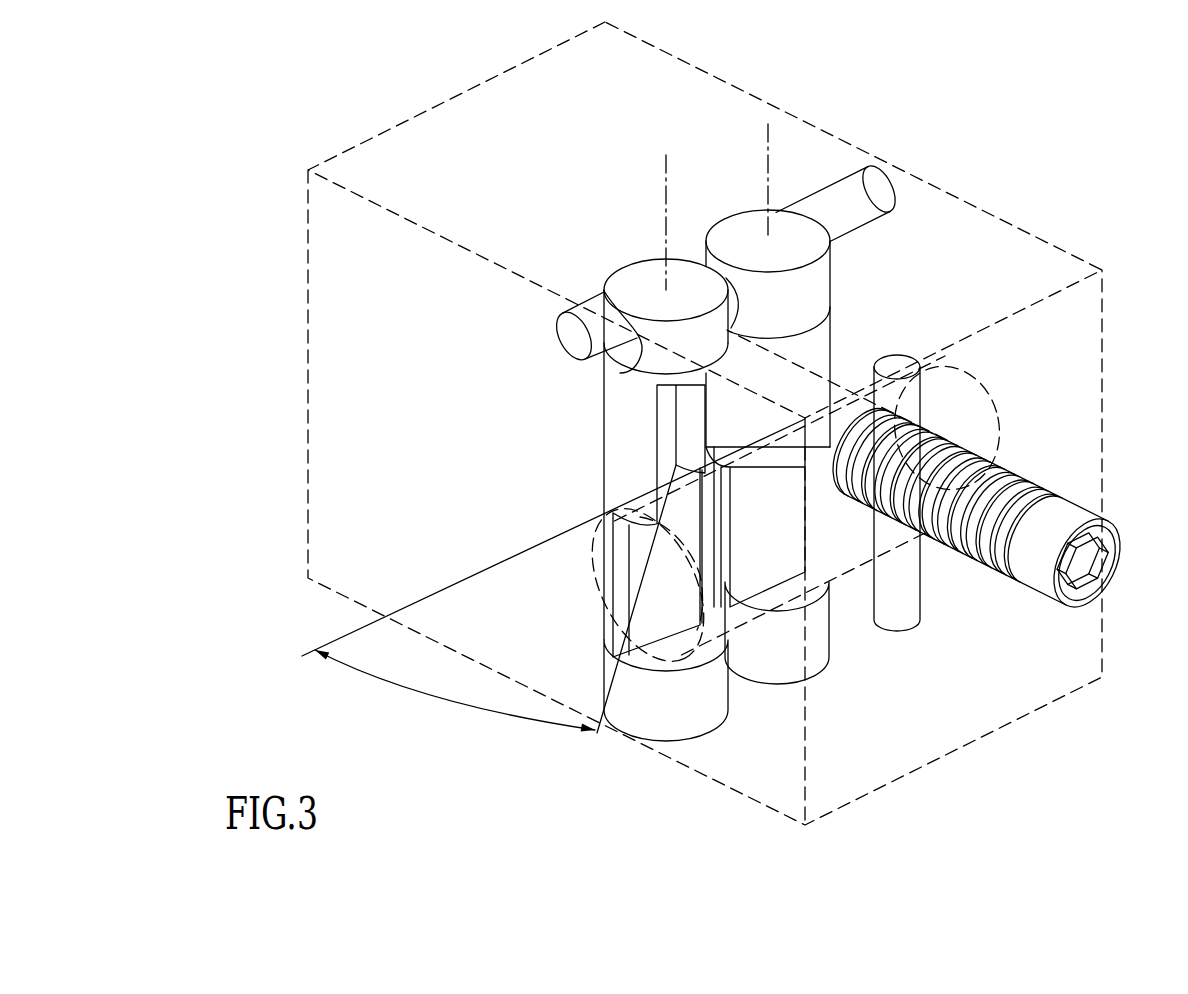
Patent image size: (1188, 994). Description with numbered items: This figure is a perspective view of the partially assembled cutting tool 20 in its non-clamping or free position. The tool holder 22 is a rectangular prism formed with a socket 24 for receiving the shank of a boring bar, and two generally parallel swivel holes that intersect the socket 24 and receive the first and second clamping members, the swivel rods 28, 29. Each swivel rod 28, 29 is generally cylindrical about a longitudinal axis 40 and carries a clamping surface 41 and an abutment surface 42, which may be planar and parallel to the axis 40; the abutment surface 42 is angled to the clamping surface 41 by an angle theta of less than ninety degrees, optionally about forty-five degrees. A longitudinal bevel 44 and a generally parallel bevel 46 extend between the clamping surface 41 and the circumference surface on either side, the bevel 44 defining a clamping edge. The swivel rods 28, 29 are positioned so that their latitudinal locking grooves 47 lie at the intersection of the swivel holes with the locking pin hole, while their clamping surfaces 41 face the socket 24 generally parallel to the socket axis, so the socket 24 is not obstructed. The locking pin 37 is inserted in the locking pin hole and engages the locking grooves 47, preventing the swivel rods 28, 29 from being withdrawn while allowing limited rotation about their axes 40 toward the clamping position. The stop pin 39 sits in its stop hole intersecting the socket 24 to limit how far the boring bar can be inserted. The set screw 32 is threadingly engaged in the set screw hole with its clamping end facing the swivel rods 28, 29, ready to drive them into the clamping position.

The cutting tool 20 is at (246, 182).
The tool holder 22 is at (432, 431).
The socket 24 is at (993, 413).
The swivel rod 28 is at (679, 288).
The swivel rod 29 is at (795, 239).
The set screw 32 is at (1033, 503).
The locking pin 37 is at (852, 201).
The stop pin 39 is at (895, 365).
The longitudinal axis 40 is at (667, 212).
The clamping surface 41 is at (682, 595).
The abutment surface 42 is at (766, 431).
The bevel 44 is at (630, 663).
The bevel 46 is at (722, 608).
The locking groove 47 is at (603, 358).